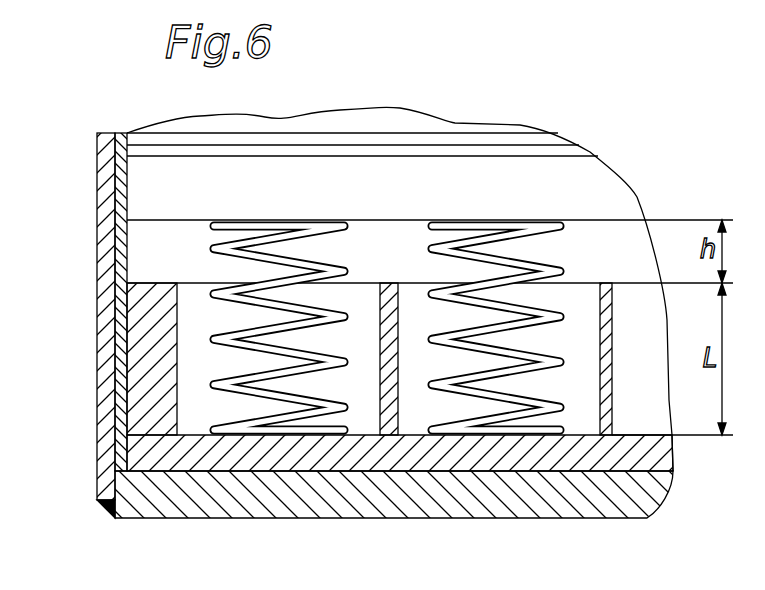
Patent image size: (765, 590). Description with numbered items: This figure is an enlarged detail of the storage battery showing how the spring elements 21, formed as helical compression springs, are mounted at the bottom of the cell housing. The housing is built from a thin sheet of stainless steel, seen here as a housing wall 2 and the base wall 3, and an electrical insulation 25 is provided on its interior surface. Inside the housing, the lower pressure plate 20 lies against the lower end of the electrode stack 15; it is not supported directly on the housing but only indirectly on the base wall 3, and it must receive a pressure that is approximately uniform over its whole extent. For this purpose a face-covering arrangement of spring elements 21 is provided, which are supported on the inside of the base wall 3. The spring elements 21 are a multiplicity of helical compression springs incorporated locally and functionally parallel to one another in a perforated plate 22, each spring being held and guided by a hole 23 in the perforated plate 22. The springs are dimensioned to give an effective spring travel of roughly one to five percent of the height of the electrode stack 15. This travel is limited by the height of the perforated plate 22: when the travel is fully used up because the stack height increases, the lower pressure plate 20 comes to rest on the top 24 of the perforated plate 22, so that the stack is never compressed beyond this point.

The electrode stack 15 is at (455, 140).
The lower pressure plate 20 is at (573, 180).
The housing wall 2 is at (107, 282).
The electrical insulation 25 is at (125, 352).
The top of the perforated plate 24 is at (157, 283).
The hole 23 is at (635, 322).
The spring elements 21 is at (460, 430).
The perforated plate 22 is at (583, 407).
The base wall 3 is at (252, 507).